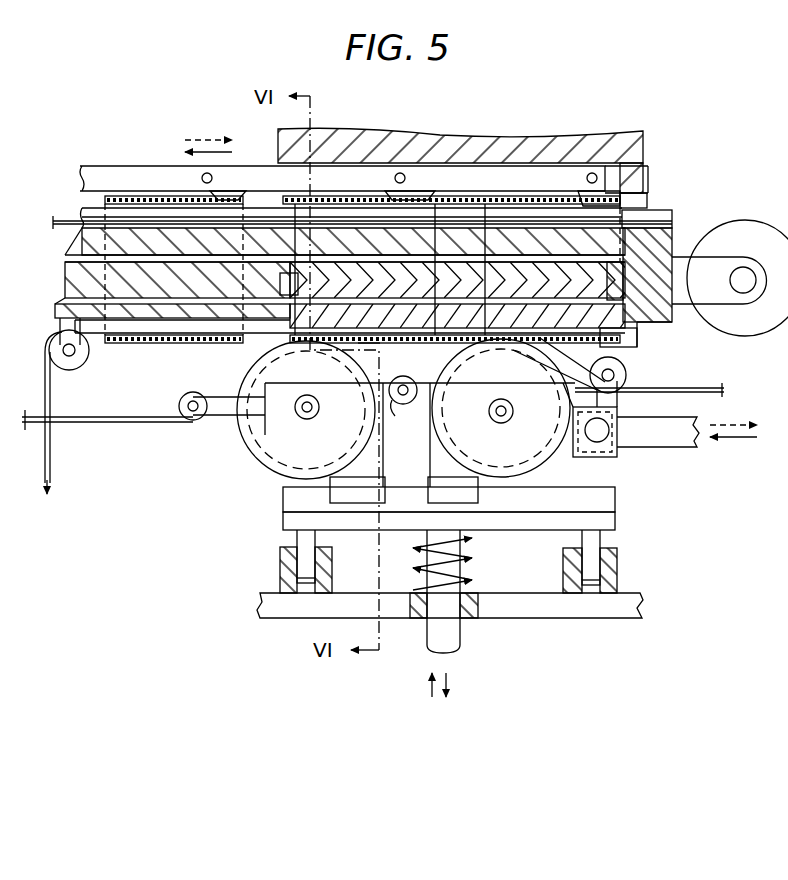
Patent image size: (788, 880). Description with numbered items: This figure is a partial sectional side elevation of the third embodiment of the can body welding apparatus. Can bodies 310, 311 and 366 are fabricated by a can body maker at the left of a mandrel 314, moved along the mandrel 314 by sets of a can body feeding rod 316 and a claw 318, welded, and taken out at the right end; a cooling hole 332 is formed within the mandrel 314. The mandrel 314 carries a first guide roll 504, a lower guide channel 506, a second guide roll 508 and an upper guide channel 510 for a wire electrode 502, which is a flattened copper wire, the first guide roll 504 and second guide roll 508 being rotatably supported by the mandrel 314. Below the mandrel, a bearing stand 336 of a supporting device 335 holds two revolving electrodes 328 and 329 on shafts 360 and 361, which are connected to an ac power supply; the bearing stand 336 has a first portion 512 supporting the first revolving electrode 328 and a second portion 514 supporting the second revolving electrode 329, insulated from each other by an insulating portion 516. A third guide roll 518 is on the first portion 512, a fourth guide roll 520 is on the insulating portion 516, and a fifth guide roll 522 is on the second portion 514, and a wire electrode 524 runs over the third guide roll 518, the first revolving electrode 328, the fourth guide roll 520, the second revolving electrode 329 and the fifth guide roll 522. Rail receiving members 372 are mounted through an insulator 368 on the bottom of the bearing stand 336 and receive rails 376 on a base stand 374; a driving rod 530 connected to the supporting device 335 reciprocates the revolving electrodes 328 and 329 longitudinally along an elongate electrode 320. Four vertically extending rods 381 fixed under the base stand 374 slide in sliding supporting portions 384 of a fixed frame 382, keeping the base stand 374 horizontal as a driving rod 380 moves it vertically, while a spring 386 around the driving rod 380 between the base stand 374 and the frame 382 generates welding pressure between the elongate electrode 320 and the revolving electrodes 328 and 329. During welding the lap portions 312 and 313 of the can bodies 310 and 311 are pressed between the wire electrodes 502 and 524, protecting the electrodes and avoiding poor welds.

The can body 310 is at (622, 185).
The can body 311 is at (432, 195).
The lap portion 312 is at (563, 350).
The lap portion 313 is at (368, 343).
The mandrel 314 is at (672, 222).
The can body feeding rod 316 is at (620, 178).
The claw 318 is at (598, 196).
The elongate electrode 320 is at (650, 333).
The first revolving electrode 328 is at (538, 473).
The second revolving electrode 329 is at (272, 470).
The cooling hole 332 is at (65, 296).
The supporting device 335 is at (625, 458).
The bearing stand 336 is at (285, 432).
The shaft 360 is at (503, 422).
The shaft 361 is at (309, 418).
The can body 366 is at (236, 196).
The insulator 368 is at (335, 477).
The rail receiving member 372 is at (355, 503).
The base stand 374 is at (618, 520).
The rail 376 is at (618, 496).
The driving rod 380 is at (433, 640).
The vertically extending rod 381 is at (298, 555).
The frame 382 is at (618, 618).
The sliding supporting portion 384 is at (282, 573).
The spring 386 is at (472, 558).
The wire electrode 502 is at (52, 473).
The first guide roll 504 is at (72, 370).
The lower guide channel 506 is at (250, 343).
The second guide roll 508 is at (760, 336).
The upper guide channel 510 is at (650, 212).
The first portion 512 is at (592, 458).
The second portion 514 is at (262, 427).
The insulating portion 516 is at (406, 478).
The third guide roll 518 is at (628, 376).
The fourth guide roll 520 is at (398, 404).
The fifth guide roll 522 is at (143, 407).
The wire electrode 524 is at (722, 393).
The driving rod 530 is at (697, 440).